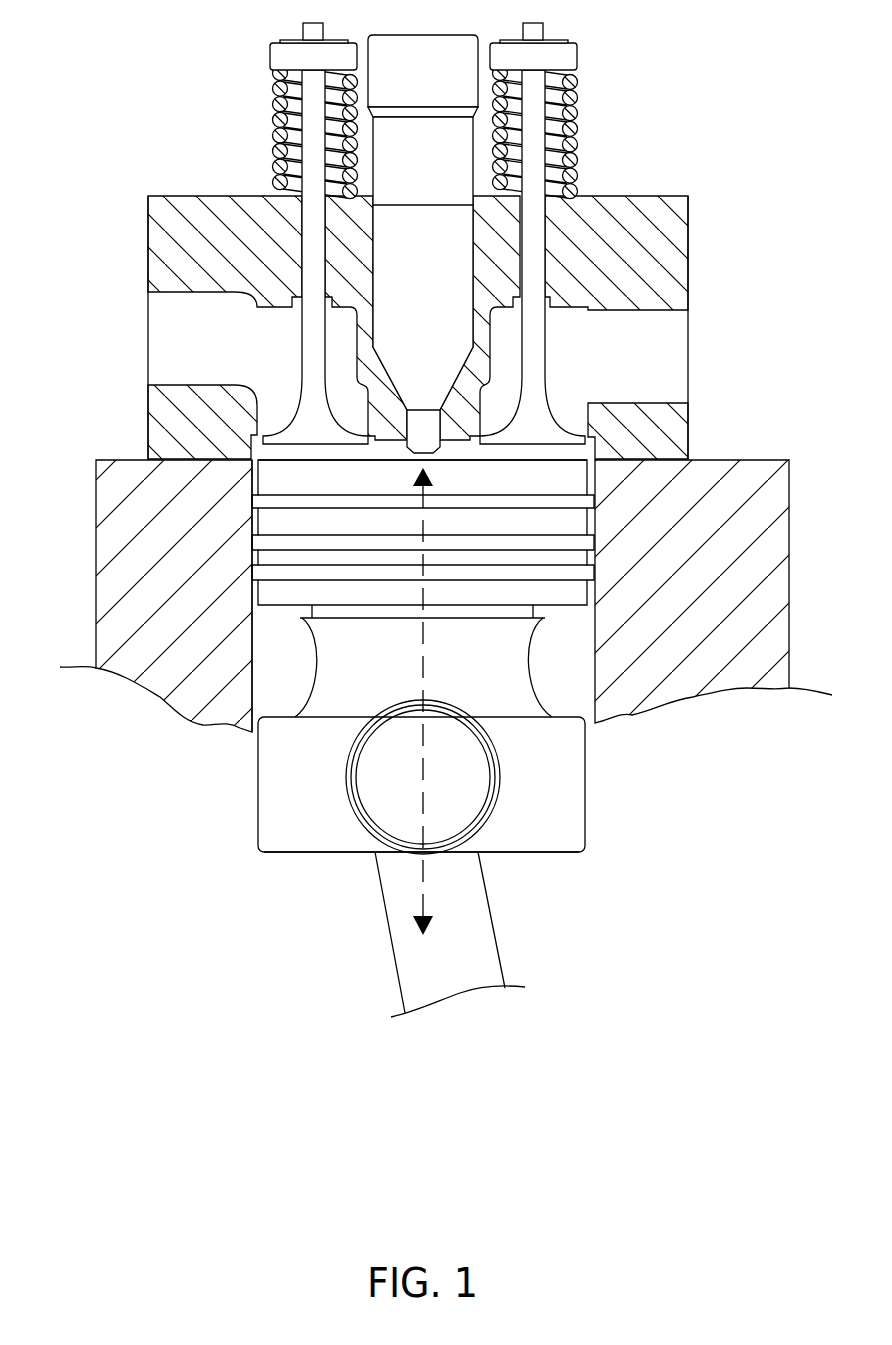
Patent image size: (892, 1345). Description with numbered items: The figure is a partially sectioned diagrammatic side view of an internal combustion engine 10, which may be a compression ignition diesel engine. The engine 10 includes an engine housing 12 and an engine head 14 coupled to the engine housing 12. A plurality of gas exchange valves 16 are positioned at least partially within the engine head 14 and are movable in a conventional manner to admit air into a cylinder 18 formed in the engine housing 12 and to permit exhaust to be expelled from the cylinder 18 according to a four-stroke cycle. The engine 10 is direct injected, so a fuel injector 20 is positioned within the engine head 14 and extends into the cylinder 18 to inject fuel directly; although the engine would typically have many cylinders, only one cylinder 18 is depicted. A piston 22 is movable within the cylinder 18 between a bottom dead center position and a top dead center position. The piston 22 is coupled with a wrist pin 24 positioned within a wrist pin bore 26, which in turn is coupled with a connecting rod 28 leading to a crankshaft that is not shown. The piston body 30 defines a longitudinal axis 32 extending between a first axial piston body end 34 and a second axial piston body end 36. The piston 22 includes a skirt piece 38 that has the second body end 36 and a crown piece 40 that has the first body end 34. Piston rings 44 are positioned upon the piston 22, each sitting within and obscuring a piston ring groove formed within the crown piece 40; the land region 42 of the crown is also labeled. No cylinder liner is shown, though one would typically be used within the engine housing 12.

The internal combustion engine 10 is at (85, 305).
The engine housing 12 is at (96, 481).
The engine head 14 is at (148, 206).
The gas exchange valves 16 is at (312, 132).
The cylinder 18 is at (258, 672).
The fuel injector 20 is at (397, 262).
The piston 22 is at (257, 833).
The wrist pin 24 is at (362, 776).
The wrist pin bore 26 is at (478, 815).
The connecting rod 28 is at (415, 977).
The piston body 30 is at (270, 773).
The longitudinal axis 32 is at (425, 910).
The first axial piston body end 34 is at (570, 455).
The second axial piston body end 36 is at (548, 858).
The skirt piece 38 is at (533, 673).
The crown piece 40 is at (595, 487).
The top ring land 42 is at (258, 479).
The piston rings 44 is at (585, 540).